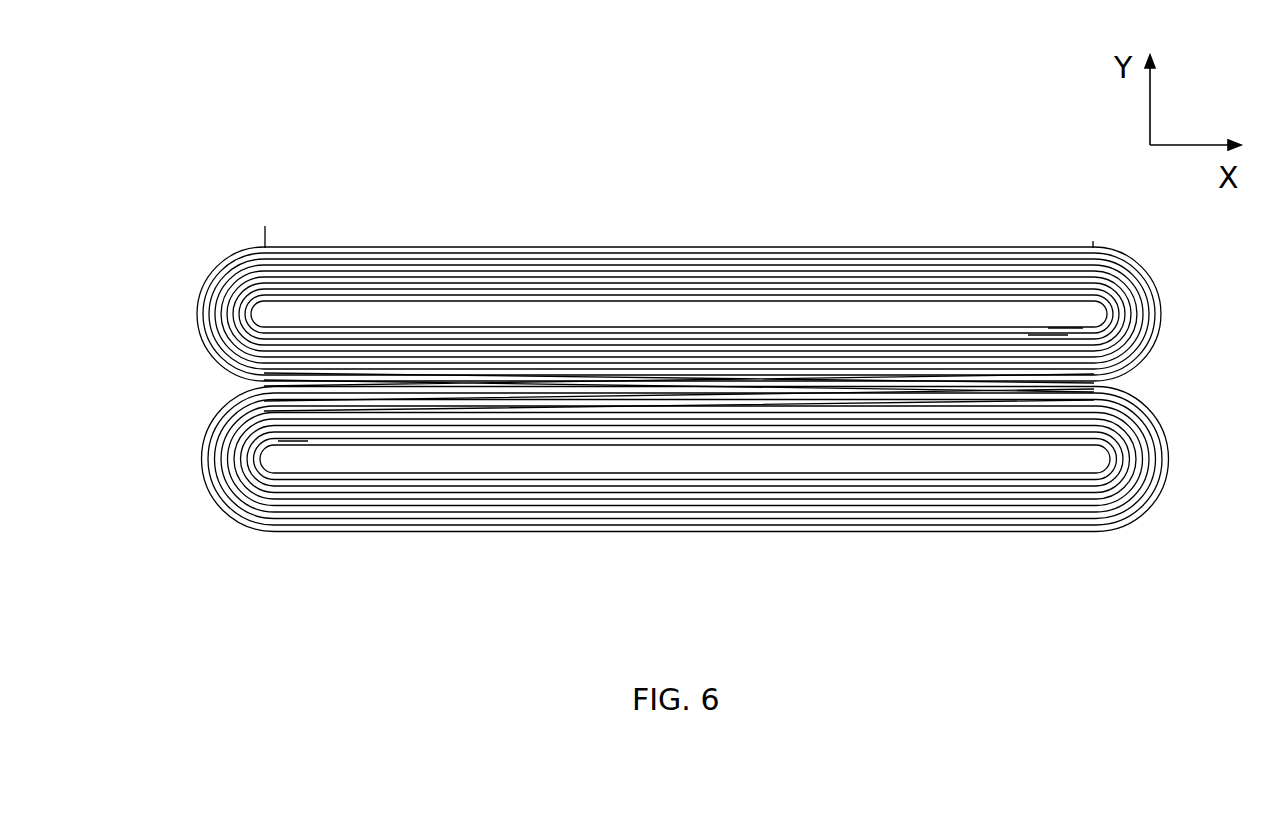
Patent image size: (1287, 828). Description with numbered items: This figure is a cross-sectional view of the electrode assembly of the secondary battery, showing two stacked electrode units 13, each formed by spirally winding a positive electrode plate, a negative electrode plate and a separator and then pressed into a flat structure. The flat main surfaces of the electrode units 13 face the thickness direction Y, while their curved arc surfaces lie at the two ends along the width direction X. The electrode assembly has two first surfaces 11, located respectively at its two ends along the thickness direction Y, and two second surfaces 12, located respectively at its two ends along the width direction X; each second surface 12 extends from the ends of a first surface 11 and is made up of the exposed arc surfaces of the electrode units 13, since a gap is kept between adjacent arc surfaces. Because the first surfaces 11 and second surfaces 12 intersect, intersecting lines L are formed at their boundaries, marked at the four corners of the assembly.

The first surface 11 is at (680, 240).
The second surface 12 is at (190, 306).
The electrode unit 13 is at (176, 345).
The intersecting line L is at (257, 218).